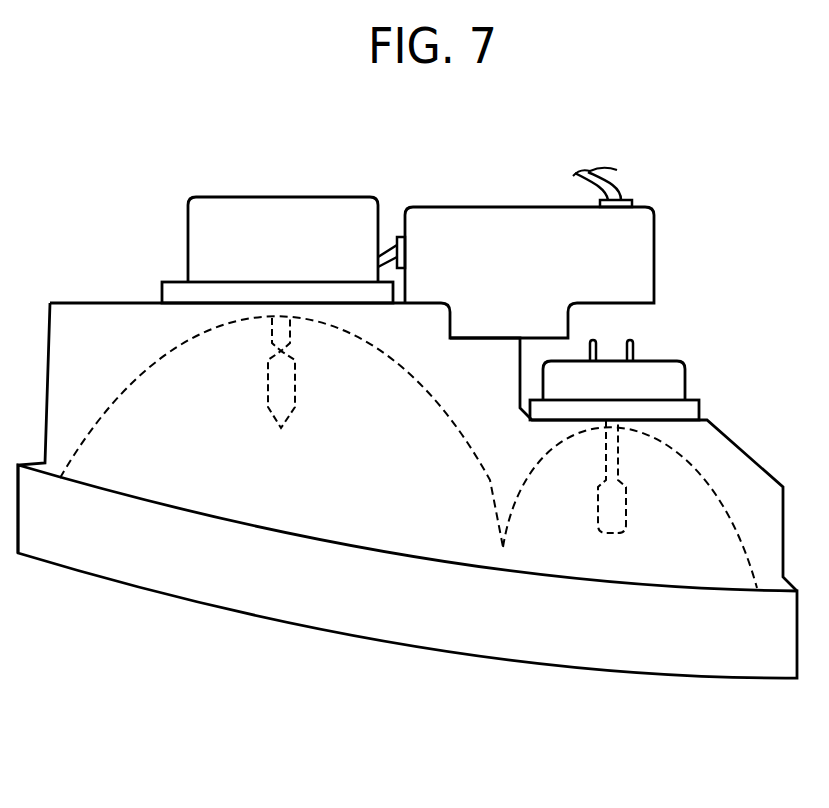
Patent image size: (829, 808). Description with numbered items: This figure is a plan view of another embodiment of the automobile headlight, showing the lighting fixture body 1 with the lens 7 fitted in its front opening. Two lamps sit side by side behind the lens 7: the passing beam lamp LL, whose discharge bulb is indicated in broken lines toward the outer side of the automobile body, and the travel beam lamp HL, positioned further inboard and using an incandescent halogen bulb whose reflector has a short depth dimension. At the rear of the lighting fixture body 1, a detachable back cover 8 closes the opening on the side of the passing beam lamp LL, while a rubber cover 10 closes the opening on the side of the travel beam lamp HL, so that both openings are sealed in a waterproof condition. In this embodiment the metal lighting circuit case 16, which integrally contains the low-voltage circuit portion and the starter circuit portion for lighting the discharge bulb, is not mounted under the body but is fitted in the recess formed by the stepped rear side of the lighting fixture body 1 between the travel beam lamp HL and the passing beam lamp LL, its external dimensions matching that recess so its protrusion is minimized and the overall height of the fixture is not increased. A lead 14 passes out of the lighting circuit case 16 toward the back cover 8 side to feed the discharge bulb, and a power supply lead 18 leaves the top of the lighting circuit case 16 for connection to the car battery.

The lighting fixture body 1 is at (742, 467).
The lens 7 is at (720, 658).
The back cover 8 is at (290, 207).
The rubber cover 10 is at (672, 383).
The lead 14 is at (385, 250).
The lighting circuit case 16 is at (635, 278).
The power supply lead 18 is at (623, 183).
The passing beam lamp LL is at (277, 621).
The travel beam lamp HL is at (595, 666).